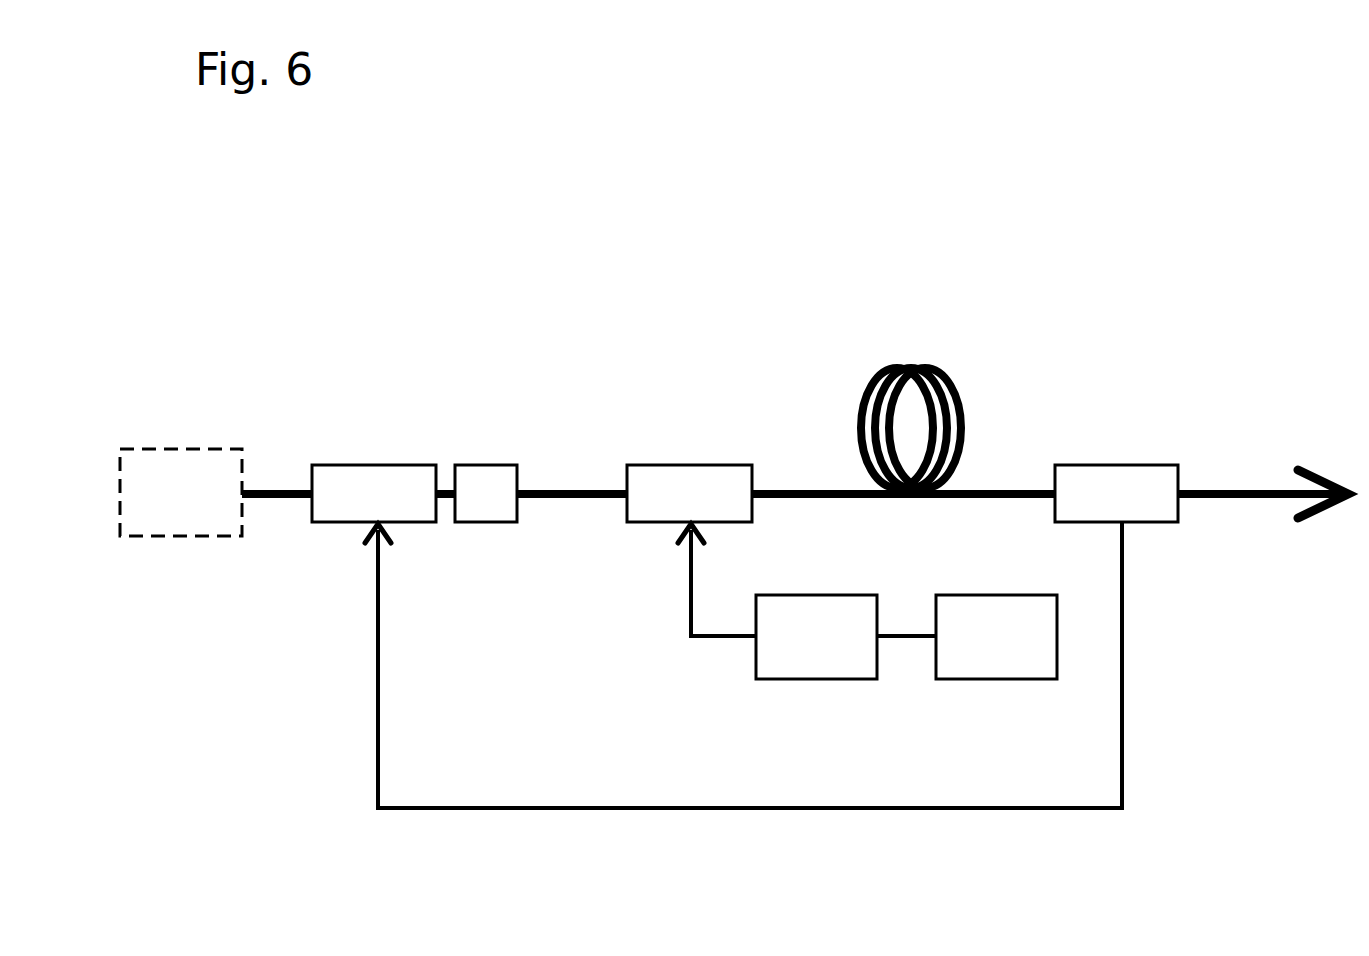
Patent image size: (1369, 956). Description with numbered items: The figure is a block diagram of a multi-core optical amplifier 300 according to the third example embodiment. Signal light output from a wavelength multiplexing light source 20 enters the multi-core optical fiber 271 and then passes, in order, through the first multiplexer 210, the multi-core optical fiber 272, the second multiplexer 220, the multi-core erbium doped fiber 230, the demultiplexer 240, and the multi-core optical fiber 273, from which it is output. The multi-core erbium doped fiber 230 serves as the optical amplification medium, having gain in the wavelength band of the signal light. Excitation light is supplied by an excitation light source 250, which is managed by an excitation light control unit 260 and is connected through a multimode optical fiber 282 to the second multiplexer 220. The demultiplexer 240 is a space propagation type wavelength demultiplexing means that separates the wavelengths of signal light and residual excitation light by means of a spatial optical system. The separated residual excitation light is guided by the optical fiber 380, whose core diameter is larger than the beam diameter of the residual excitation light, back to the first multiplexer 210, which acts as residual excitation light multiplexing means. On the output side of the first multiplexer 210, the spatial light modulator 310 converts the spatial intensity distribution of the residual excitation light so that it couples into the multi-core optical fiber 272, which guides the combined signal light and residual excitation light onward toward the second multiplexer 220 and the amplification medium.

The multi-core optical amplifier 300 is at (713, 202).
The wavelength multiplexing light source 20 is at (176, 448).
The first multiplexer 210 is at (378, 465).
The spatial light modulator 310 is at (488, 465).
The second multiplexer 220 is at (690, 465).
The multi-core erbium doped fiber 230 is at (910, 364).
The demultiplexer 240 is at (1122, 465).
The excitation light source 250 is at (824, 680).
The excitation light control unit 260 is at (1003, 680).
The multi-core optical fiber 271 is at (292, 498).
The multi-core optical fiber 272 is at (571, 498).
The multi-core optical fiber 273 is at (1247, 498).
The multimode optical fiber 282 is at (688, 620).
The optical fiber 380 is at (377, 682).